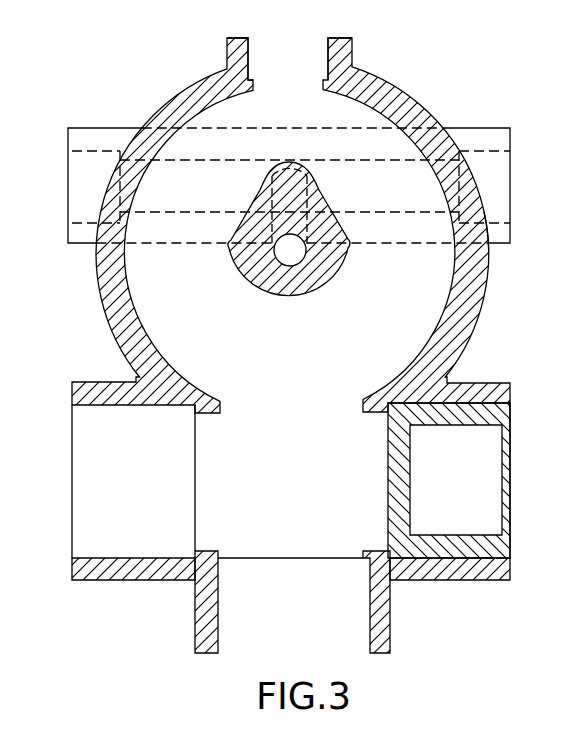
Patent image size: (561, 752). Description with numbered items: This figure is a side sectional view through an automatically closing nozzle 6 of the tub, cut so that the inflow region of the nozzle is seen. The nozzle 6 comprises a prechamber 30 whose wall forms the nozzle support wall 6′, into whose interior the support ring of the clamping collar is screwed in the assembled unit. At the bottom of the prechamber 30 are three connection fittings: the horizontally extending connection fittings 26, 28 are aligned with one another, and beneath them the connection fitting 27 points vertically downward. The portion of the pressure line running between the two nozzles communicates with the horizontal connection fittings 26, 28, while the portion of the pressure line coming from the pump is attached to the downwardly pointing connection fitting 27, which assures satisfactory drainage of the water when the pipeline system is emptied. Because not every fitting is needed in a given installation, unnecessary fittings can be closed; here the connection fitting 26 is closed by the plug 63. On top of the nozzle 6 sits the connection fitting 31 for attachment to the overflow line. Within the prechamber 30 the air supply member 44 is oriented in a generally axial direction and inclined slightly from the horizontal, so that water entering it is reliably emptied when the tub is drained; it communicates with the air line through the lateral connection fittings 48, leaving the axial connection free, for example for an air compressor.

The nozzle 6 is at (291, 295).
The nozzle support wall 6' is at (514, 252).
The connection fitting 31 is at (317, 53).
The lateral connection fittings 48 is at (93, 158).
The air supply member 44 is at (315, 260).
The prechamber 30 is at (304, 338).
The plug 63 is at (388, 488).
The connection fitting 28 is at (120, 545).
The connection fitting 27 is at (232, 617).
The connection fitting 26 is at (455, 568).